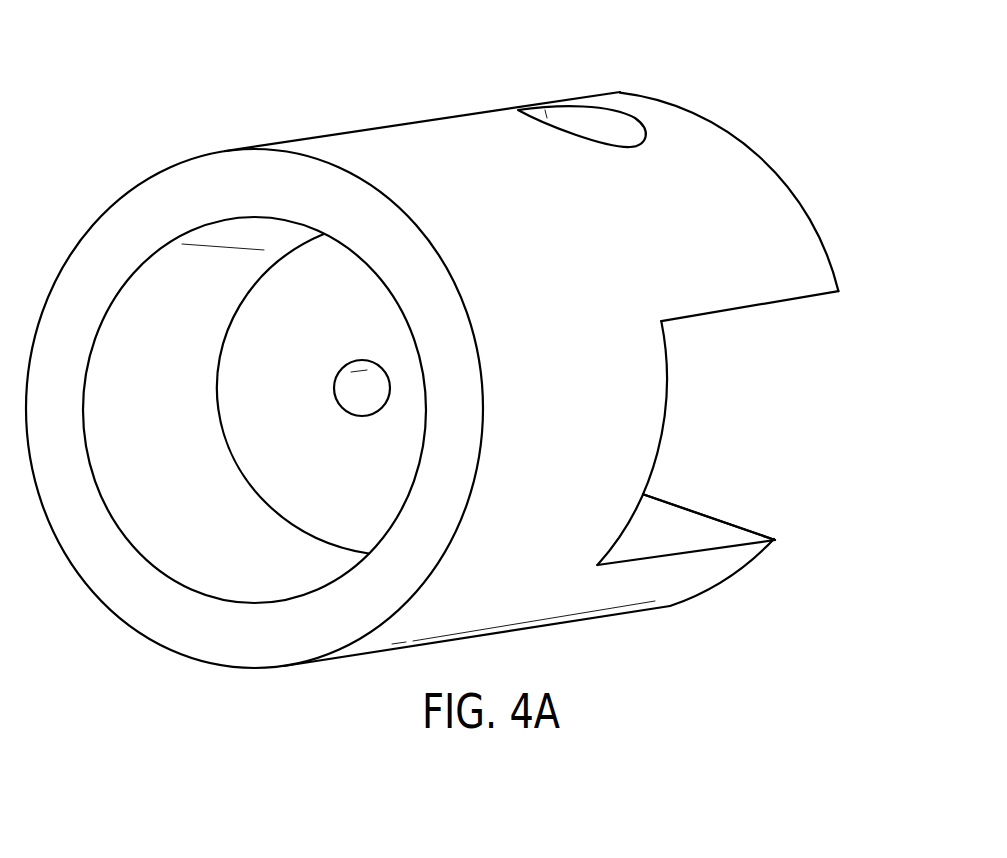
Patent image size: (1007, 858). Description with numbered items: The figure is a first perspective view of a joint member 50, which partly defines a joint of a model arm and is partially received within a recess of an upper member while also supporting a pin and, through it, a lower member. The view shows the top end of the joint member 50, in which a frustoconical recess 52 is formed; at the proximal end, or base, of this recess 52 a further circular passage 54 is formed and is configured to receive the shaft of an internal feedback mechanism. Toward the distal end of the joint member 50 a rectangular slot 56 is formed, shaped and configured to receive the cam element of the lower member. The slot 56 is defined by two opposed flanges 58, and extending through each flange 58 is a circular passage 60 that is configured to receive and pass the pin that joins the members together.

The joint member 50 is at (283, 113).
The frustoconical recess 52 is at (142, 597).
The circular passage 54 is at (356, 392).
The rectangular slot 56 is at (832, 375).
The flanges 58 is at (778, 198).
The circular passage 60 is at (611, 128).